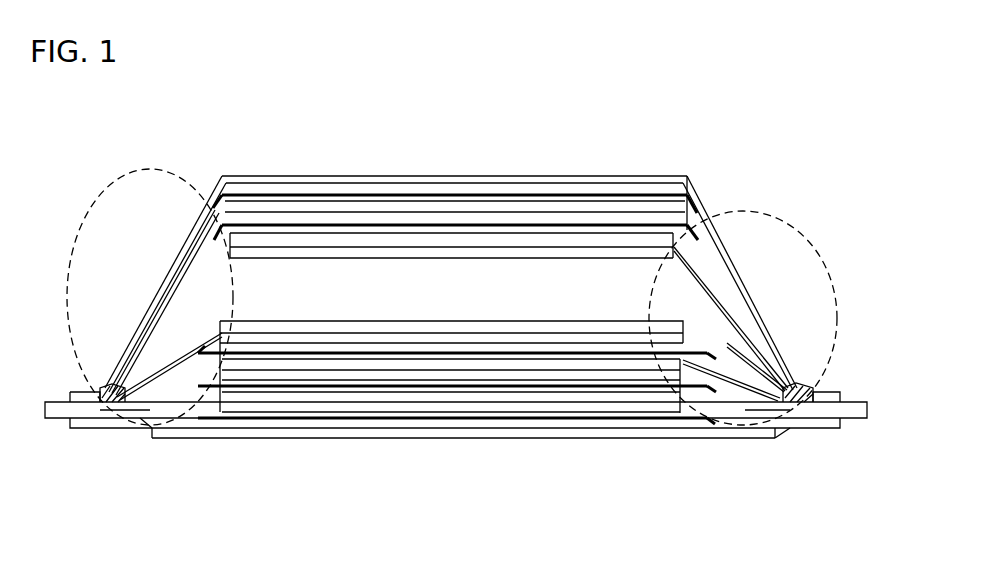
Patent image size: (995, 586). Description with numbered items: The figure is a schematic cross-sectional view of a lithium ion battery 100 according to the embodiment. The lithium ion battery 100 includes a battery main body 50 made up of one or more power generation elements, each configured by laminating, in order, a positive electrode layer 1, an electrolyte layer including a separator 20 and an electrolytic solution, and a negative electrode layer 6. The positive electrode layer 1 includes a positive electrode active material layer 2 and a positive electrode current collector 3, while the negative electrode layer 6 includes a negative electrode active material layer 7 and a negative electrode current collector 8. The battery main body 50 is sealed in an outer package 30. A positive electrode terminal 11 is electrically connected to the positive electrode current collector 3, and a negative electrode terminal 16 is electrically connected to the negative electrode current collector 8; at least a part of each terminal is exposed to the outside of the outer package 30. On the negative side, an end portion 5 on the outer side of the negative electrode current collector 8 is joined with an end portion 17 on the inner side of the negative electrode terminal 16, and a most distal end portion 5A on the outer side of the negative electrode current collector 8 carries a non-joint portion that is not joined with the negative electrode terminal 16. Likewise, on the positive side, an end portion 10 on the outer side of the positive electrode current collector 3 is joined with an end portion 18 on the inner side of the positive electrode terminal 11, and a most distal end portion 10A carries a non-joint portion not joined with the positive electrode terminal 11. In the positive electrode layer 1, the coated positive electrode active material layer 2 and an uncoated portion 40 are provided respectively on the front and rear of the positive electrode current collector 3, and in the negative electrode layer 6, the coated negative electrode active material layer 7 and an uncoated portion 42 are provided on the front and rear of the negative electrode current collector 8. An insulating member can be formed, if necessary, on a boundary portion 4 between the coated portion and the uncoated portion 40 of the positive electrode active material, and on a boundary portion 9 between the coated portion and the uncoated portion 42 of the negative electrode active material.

The lithium ion battery 100 is at (556, 119).
The positive electrode layer 1 is at (228, 252).
The positive electrode active material layer 2 is at (468, 253).
The positive electrode current collector 3 is at (748, 375).
The boundary portion 4 is at (673, 368).
The end portion 5 is at (110, 412).
The most distal end portion 5A is at (107, 408).
The negative electrode layer 6 is at (687, 328).
The negative electrode active material layer 7 is at (367, 222).
The negative electrode current collector 8 is at (142, 358).
The boundary portion 9 is at (212, 207).
The end portion 10 is at (790, 407).
The most distal end portion 10A is at (800, 427).
The positive electrode terminal 11 is at (857, 413).
The negative electrode terminal 16 is at (57, 420).
The end portion 17 is at (120, 417).
The end portion 18 is at (787, 410).
The separator 20 is at (210, 420).
The outer package 30 is at (350, 438).
The uncoated portion 40 is at (805, 222).
The uncoated portion 42 is at (85, 210).
The battery main body 50 is at (713, 260).